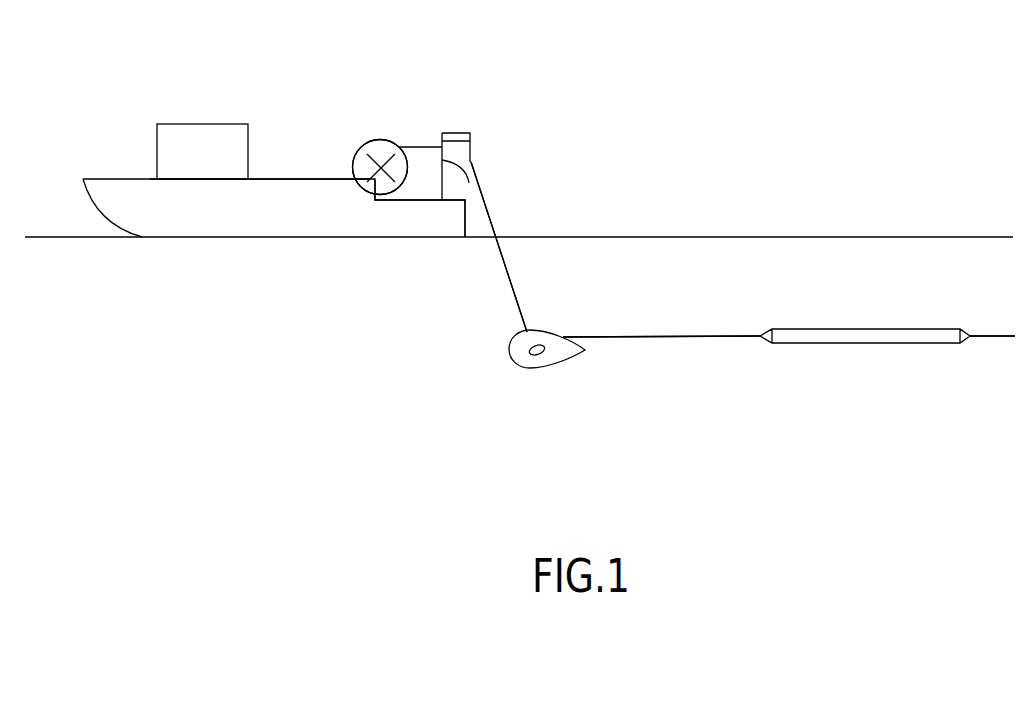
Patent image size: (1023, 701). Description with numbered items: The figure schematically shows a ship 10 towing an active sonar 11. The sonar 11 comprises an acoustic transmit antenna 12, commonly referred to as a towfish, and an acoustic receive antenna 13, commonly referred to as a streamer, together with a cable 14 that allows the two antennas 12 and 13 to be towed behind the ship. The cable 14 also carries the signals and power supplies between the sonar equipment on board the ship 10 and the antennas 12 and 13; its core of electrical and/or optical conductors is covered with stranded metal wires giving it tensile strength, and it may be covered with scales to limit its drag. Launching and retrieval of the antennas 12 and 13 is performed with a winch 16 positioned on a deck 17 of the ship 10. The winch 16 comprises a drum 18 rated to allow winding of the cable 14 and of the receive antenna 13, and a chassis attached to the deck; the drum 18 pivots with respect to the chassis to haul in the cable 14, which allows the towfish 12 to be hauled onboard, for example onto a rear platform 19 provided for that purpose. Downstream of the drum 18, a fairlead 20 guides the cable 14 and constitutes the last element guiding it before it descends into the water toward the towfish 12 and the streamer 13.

The ship 10 is at (262, 228).
The active sonar 11 is at (689, 382).
The acoustic transmit antenna 12 is at (552, 366).
The acoustic receive antenna 13 is at (835, 328).
The cable 14 is at (508, 272).
The winch 16 is at (380, 138).
The deck 17 is at (293, 178).
The drum 18 is at (380, 167).
The rear platform 19 is at (409, 201).
The fairlead 20 is at (458, 149).